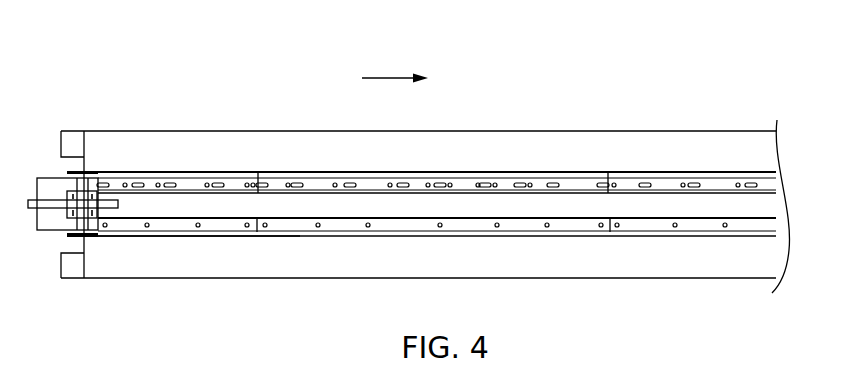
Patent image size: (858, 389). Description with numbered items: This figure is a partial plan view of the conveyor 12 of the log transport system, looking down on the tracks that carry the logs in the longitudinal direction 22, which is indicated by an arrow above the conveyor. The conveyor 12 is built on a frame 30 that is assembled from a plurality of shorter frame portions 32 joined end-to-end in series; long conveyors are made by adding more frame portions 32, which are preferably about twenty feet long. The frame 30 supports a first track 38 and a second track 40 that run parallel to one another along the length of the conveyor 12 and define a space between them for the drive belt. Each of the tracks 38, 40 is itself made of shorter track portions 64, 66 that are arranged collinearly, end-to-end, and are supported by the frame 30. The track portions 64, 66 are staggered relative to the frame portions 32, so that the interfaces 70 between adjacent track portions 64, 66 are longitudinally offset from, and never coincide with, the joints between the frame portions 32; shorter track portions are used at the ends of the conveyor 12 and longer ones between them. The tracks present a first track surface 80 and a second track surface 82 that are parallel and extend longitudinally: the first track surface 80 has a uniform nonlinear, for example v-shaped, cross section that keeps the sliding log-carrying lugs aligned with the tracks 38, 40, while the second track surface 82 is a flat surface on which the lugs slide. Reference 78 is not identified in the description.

The conveyor 12 is at (591, 104).
The longitudinal direction 22 is at (387, 77).
The frame 30 is at (152, 240).
The frame portions 32 is at (218, 234).
The first track 38 is at (191, 172).
The second track 40 is at (290, 235).
The track portions 64 is at (235, 178).
The track portions 66 is at (177, 223).
The interfaces between adjacent track portions 70 is at (258, 173).
The gap between rails 78 is at (460, 210).
The first track surface 80 is at (773, 190).
The second track surface 82 is at (782, 225).